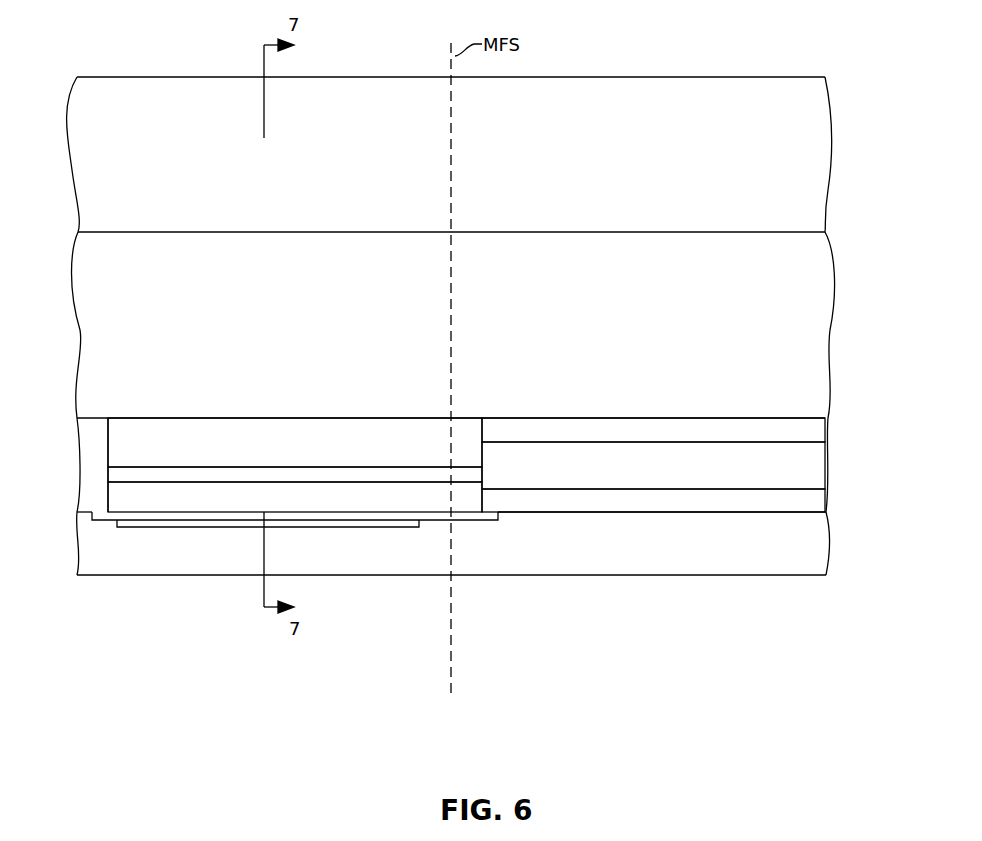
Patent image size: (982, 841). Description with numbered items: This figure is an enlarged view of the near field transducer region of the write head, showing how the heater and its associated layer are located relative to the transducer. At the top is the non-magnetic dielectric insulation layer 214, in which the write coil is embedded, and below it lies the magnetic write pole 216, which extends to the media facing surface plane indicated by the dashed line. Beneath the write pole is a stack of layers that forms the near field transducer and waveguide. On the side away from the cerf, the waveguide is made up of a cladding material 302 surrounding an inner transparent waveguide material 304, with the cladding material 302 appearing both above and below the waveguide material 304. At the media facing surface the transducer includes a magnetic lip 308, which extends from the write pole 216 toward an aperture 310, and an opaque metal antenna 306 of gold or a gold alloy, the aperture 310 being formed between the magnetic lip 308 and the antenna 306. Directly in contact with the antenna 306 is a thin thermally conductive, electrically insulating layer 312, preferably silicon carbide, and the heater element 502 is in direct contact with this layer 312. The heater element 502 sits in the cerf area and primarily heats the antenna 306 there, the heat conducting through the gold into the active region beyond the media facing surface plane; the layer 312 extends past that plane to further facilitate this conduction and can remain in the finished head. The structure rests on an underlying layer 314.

The dielectric insulation layer 214 is at (598, 136).
The magnetic write pole 216 is at (537, 340).
The cladding material 302 is at (671, 432).
The waveguide material 304 is at (678, 465).
The antenna 306 is at (220, 498).
The magnetic lip 308 is at (230, 444).
The aperture 310 is at (363, 472).
The thermally conductive, electrically insulating layer 312 is at (241, 517).
The substrate layer 314 is at (655, 542).
The heater element 502 is at (326, 525).